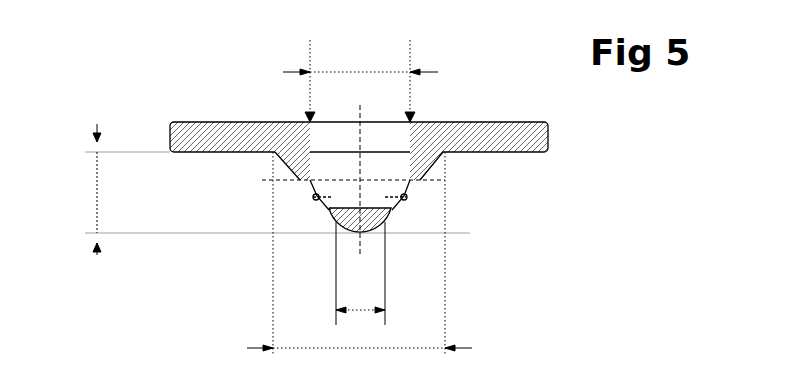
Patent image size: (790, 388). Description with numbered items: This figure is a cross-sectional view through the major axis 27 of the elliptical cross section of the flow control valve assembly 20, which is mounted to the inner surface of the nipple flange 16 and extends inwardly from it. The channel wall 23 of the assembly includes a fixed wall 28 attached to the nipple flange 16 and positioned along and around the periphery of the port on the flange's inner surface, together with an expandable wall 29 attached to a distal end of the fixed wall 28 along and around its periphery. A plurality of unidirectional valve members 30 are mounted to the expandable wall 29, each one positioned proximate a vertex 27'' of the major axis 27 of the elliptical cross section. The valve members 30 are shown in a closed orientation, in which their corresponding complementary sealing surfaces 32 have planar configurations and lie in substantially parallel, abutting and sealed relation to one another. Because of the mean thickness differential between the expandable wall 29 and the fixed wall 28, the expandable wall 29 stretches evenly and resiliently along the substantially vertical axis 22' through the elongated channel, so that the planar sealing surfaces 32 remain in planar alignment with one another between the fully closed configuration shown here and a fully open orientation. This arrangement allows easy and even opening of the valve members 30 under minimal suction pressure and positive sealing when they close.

The nipple flange 16 is at (548, 135).
The flow control valve assembly 20 is at (250, 97).
The substantially vertical axis 22' is at (435, 260).
The channel wall 23 is at (407, 165).
The major axis 27 is at (459, 74).
The vertex of the major axis 27'' is at (360, 23).
The fixed wall 28 is at (433, 163).
The expandable wall 29 is at (310, 183).
The valve member 30 is at (403, 197).
The sealing surface 32 is at (308, 262).